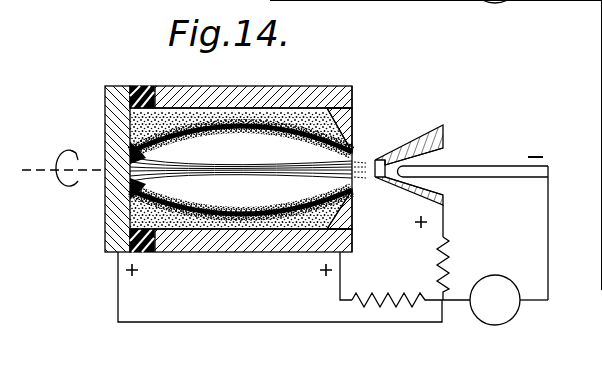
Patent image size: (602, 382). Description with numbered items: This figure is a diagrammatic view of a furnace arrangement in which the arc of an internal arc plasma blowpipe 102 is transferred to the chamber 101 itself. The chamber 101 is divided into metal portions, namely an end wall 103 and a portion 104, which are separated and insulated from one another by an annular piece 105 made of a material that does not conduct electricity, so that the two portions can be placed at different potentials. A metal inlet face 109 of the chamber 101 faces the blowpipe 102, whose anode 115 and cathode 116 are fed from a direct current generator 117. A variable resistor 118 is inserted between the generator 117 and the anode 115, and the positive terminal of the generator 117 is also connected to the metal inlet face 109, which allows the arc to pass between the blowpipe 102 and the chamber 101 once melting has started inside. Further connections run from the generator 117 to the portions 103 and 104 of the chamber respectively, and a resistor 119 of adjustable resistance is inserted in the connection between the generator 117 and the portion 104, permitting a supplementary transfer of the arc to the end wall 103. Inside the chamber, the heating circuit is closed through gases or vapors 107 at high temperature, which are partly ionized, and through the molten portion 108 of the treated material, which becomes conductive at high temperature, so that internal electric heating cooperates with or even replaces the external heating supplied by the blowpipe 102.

The chamber 101 is at (266, 97).
The internal arc plasma blowpipe 102 is at (432, 165).
The end wall portion of the chamber 103 is at (112, 119).
The metal portion of the chamber 104 is at (263, 252).
The insulating piece 105 is at (151, 79).
The gases or vapors 107 is at (257, 168).
The molten portion of the treated material 108 is at (209, 202).
The inlet face of the chamber 109 is at (346, 208).
The anode 115 is at (410, 143).
The cathode 116 is at (492, 170).
The direct current generator 117 is at (502, 285).
The variable resistor 118 is at (450, 246).
The resistor of adjustable resistance 119 is at (390, 287).